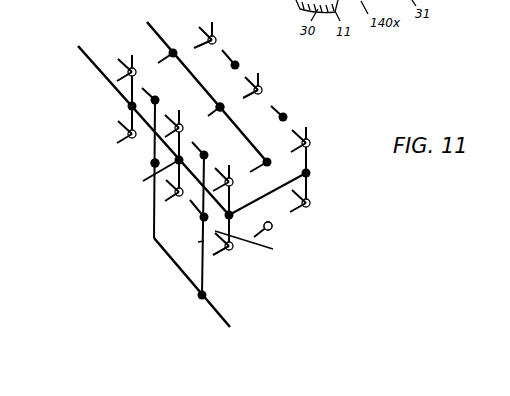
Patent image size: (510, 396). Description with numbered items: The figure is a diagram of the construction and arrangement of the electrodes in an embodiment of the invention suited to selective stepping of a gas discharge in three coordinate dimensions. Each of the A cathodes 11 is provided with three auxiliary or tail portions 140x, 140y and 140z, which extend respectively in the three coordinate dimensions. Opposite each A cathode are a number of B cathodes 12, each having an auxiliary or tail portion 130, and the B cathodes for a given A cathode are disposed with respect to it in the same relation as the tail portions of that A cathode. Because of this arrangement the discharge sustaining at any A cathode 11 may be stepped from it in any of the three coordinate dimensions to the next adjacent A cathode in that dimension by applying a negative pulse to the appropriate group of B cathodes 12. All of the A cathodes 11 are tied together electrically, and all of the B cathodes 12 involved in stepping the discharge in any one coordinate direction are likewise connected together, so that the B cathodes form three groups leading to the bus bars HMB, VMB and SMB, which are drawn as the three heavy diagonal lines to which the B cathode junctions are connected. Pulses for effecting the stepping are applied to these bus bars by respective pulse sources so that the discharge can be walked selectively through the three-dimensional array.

The A cathode 11 is at (135, 140).
The B cathode 12 is at (289, 115).
The auxiliary or tail portion 130 is at (272, 228).
The auxiliary or tail portion 140x is at (216, 257).
The auxiliary or tail portion 140y is at (183, 243).
The auxiliary or tail portion 140z is at (260, 244).
The bus bar HMB is at (158, 32).
The bus bar SMB is at (88, 57).
The bus bar VMB is at (218, 315).